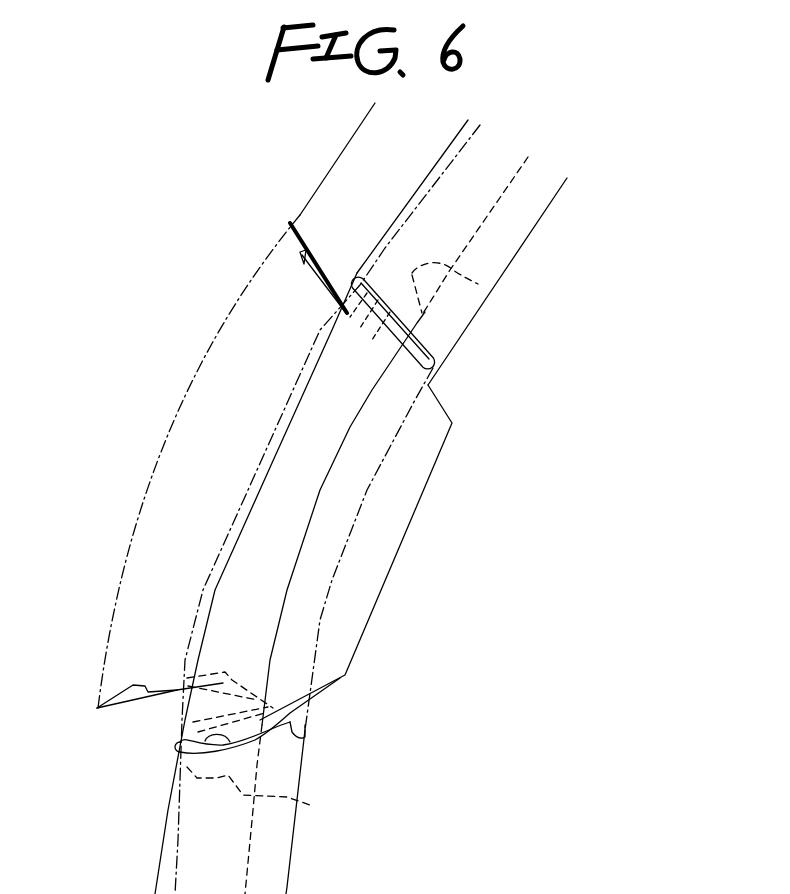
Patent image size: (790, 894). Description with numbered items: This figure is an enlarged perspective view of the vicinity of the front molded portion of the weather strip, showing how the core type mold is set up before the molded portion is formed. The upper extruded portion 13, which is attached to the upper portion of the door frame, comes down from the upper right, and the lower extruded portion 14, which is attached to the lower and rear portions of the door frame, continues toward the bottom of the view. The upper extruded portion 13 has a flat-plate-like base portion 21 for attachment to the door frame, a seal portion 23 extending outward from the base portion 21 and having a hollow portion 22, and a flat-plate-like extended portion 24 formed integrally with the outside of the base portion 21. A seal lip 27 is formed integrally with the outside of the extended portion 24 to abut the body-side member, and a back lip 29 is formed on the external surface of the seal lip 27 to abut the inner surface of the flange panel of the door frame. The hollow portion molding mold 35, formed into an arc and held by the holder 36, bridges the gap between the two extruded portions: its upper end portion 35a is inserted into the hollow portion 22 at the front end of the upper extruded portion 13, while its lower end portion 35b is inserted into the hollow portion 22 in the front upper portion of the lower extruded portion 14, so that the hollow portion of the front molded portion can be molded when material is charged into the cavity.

The upper extruded portion 13 is at (538, 218).
The lower extruded portion 14 is at (300, 775).
The base portion 21 is at (305, 737).
The hollow portion 22 is at (420, 340).
The seal portion 23 is at (410, 323).
The extended portion 24 is at (375, 318).
The seal lip 27 is at (307, 212).
The back lip 29 is at (302, 256).
The hollow portion molding mold 35 is at (280, 472).
The upper end portion 35a is at (478, 284).
The lower end portion 35b is at (310, 805).
The holder 36 is at (402, 523).